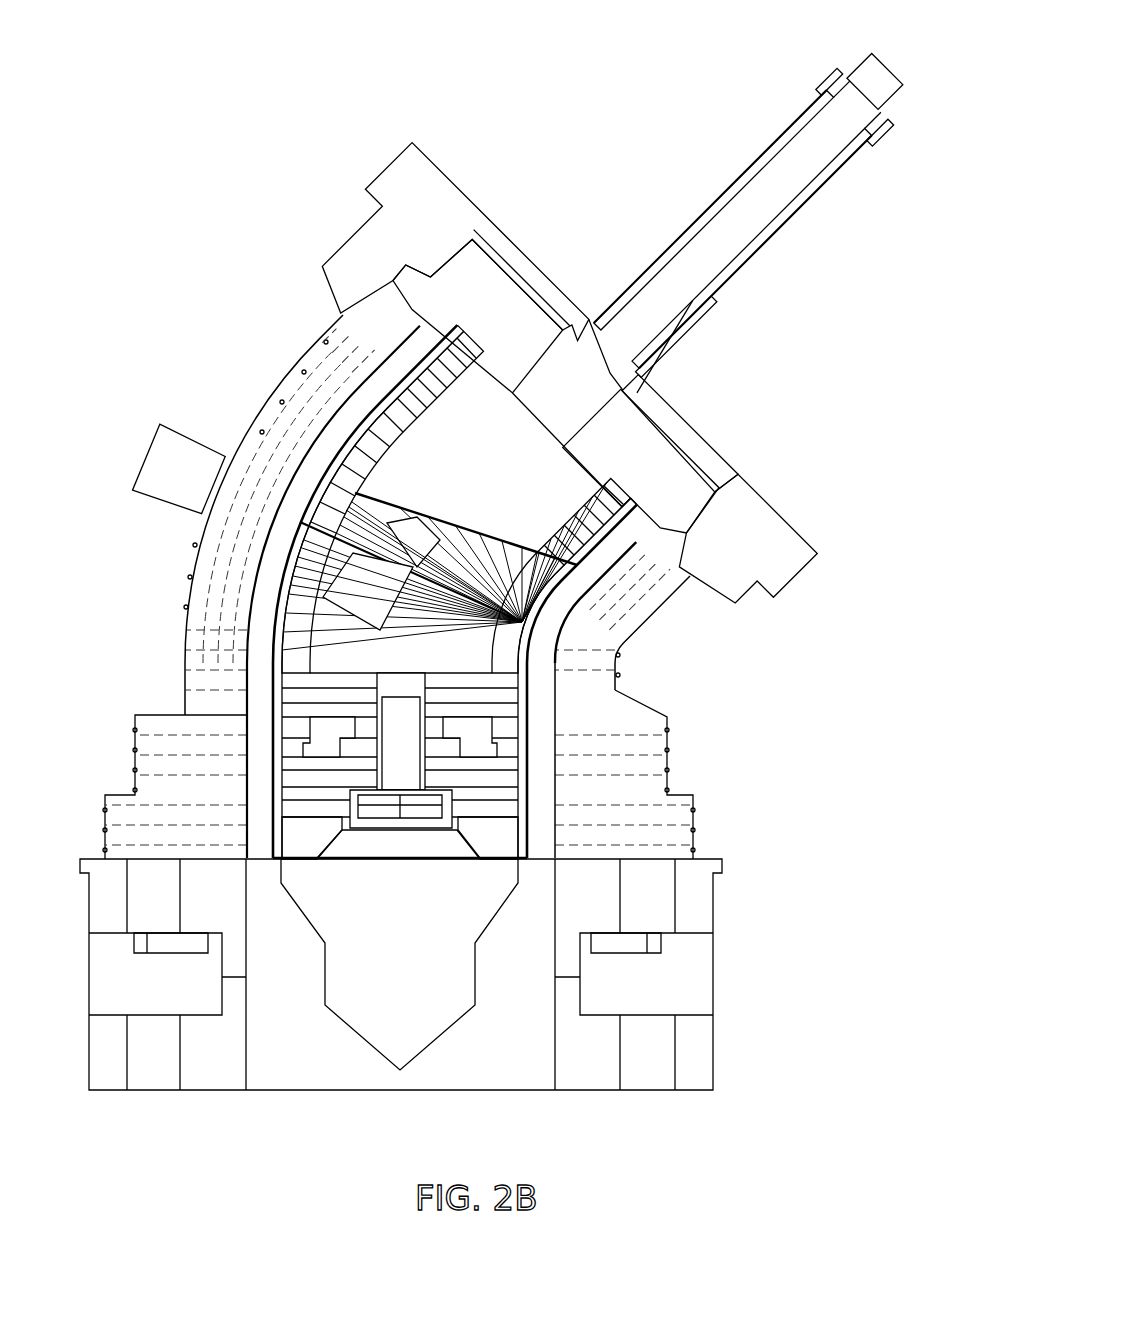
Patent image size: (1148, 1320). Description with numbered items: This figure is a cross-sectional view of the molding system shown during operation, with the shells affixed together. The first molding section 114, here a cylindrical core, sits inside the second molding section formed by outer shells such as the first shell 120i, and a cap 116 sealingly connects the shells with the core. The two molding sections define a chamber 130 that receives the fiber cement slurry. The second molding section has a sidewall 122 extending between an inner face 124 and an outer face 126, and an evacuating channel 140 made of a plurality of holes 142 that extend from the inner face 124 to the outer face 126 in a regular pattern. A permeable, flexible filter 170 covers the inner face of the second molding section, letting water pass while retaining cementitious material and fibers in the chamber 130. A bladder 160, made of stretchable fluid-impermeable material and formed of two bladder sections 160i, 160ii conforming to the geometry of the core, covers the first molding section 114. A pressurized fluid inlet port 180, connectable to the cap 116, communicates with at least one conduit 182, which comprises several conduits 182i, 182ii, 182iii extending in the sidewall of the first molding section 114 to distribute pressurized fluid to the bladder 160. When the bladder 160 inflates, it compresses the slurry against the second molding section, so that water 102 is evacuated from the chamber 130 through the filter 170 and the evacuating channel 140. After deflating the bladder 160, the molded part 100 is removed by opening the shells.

The molded part 100 is at (275, 1078).
The water 102 is at (298, 352).
The first molding section 114 is at (640, 470).
The cap 116 is at (637, 425).
The first shell 120i is at (780, 528).
The sidewall of second molding section 122 is at (358, 252).
The inner face of second molding section 124 is at (405, 350).
The outer face of second molding section 126 is at (320, 338).
The chamber 130 is at (268, 578).
The evacuating channel 140 is at (185, 626).
The holes 142 is at (279, 377).
The bladder 160 is at (529, 700).
The first bladder section 160i is at (618, 628).
The second bladder section 160ii is at (555, 773).
The filter 170 is at (268, 704).
The pressurized fluid inlet port 180 is at (857, 99).
The pressurized fluid conduit 182 is at (505, 470).
The first pressurized fluid conduit 182i is at (583, 563).
The second pressurized fluid conduit 182ii is at (765, 620).
The third pressurized fluid conduit 182iii is at (765, 620).